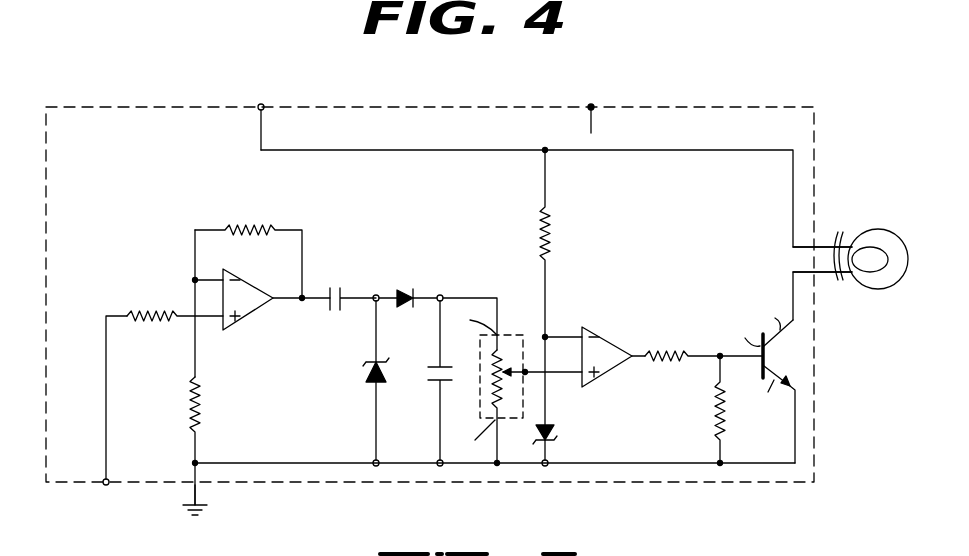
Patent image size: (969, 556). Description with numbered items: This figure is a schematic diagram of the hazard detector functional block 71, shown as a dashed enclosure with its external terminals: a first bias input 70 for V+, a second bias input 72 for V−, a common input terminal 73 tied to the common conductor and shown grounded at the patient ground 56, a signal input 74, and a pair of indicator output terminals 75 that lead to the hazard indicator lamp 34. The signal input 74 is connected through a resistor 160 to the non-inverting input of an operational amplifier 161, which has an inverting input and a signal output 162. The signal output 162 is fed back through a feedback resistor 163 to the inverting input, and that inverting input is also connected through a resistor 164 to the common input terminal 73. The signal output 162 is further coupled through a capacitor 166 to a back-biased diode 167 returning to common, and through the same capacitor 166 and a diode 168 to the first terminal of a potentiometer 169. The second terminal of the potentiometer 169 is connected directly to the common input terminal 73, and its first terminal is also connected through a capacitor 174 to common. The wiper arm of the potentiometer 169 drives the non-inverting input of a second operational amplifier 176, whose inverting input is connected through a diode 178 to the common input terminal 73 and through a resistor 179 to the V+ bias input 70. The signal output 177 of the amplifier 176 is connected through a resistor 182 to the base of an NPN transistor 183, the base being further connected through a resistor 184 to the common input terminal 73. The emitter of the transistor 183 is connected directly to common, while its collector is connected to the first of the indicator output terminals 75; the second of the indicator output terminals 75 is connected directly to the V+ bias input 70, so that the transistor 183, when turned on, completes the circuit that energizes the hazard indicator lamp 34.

The hazard indicator lamp 34 is at (880, 289).
The patient ground 56 is at (190, 510).
The first bias input 70 is at (264, 105).
The hazard detector functional block 71 is at (430, 107).
The second bias input 72 is at (594, 105).
The common input terminal 73 is at (198, 493).
The signal input 74 is at (106, 486).
The indicator output terminals 75 is at (825, 239).
The resistor 160 is at (142, 312).
The operational amplifier 161 is at (250, 292).
The signal output 162 is at (272, 305).
The feedback resistor 163 is at (245, 228).
The resistor 164 is at (203, 410).
The capacitor 166 is at (335, 290).
The back-biased diode 167 is at (368, 372).
The diode 168 is at (402, 290).
The potentiometer 169 is at (512, 332).
The capacitor 174 is at (436, 366).
The operational amplifier 176 is at (600, 345).
The signal output 177 is at (626, 360).
The diode 178 is at (552, 428).
The resistor 179 is at (552, 237).
The resistor 182 is at (660, 352).
The NPN transistor 183 is at (783, 348).
The resistor 184 is at (718, 402).